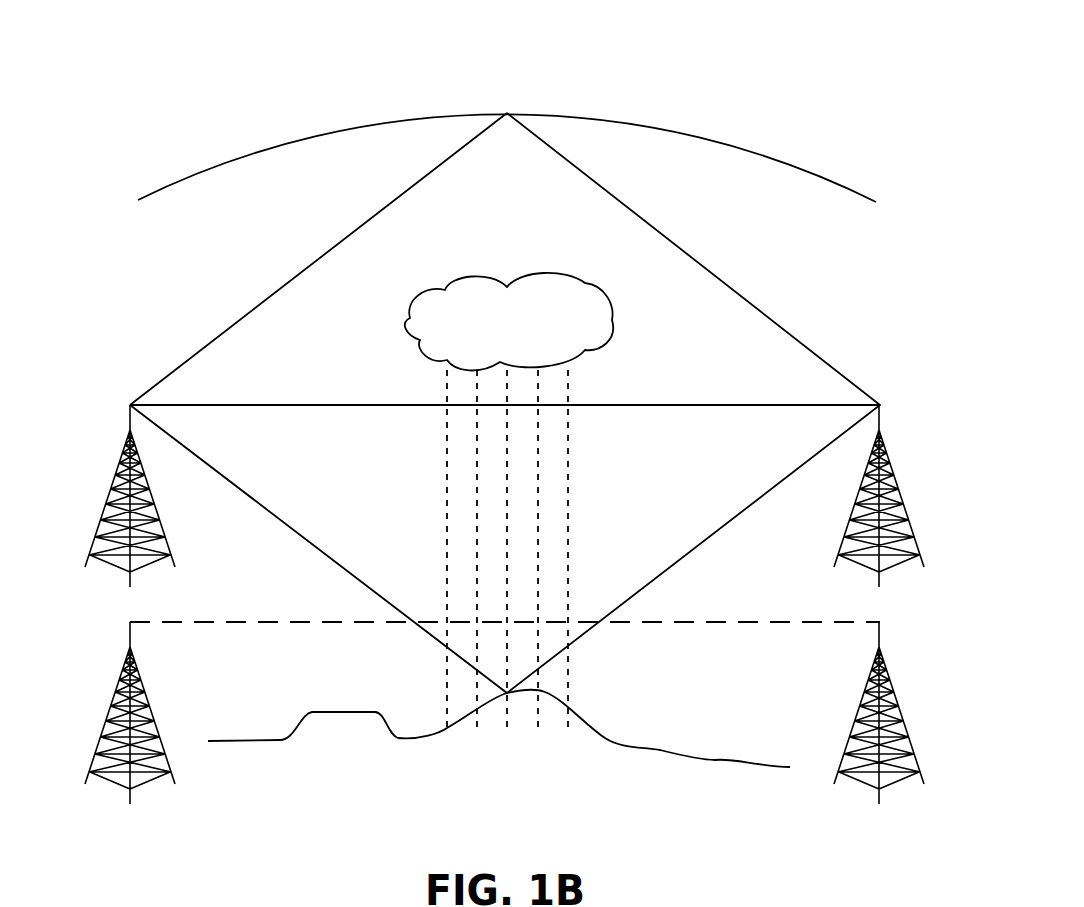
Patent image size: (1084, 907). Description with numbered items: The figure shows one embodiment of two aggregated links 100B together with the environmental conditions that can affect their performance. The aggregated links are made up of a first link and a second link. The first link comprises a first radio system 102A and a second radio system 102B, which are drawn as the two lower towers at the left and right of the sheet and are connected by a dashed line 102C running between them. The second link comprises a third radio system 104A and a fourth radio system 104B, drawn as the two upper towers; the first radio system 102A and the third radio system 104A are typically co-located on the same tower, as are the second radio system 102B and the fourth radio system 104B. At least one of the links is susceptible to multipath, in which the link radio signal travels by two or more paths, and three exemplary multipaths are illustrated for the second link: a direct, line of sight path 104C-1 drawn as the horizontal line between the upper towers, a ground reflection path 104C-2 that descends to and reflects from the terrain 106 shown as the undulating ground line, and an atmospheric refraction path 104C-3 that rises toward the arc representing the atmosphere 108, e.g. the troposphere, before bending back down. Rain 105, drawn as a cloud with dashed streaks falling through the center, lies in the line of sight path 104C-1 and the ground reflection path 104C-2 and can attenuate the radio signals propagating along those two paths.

The aggregated links 100B is at (526, 53).
The atmosphere 108 is at (760, 151).
The atmospheric refraction path 104C-3 is at (405, 190).
The line of sight path 104C-1 is at (337, 403).
The ground reflection path 104C-2 is at (428, 640).
The rain 105 is at (568, 487).
The third radio system 104A is at (100, 525).
The fourth radio system 104B is at (905, 522).
The ground communication link 102C is at (272, 625).
The first radio system 102A is at (100, 745).
The second radio system 102B is at (908, 742).
The terrain 106 is at (672, 755).